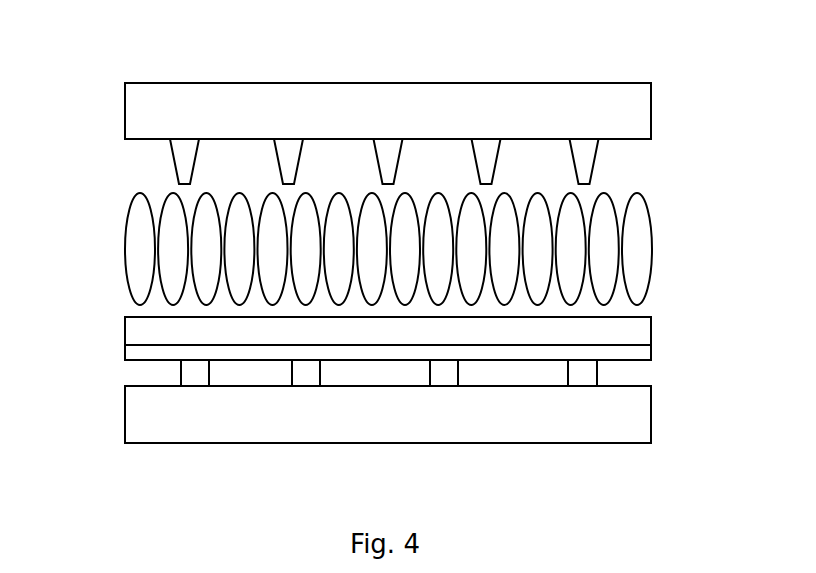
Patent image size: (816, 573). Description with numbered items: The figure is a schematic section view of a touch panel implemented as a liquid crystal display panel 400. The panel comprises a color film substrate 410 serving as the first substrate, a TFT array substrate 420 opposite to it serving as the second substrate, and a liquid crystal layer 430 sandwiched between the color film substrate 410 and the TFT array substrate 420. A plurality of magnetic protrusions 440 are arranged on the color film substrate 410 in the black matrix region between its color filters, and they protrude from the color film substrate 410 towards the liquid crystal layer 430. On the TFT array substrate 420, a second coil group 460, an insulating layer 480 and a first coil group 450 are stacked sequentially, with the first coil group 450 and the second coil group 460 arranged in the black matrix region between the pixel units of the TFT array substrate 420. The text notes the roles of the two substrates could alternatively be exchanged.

The liquid crystal display panel 400 is at (374, 11).
The color film substrate 410 is at (577, 102).
The TFT array substrate 420 is at (445, 418).
The liquid crystal layer 430 is at (127, 217).
The magnetic protrusions 440 is at (588, 148).
The first coil group 450 is at (627, 333).
The second coil group 460 is at (165, 371).
The insulating layer 480 is at (622, 353).